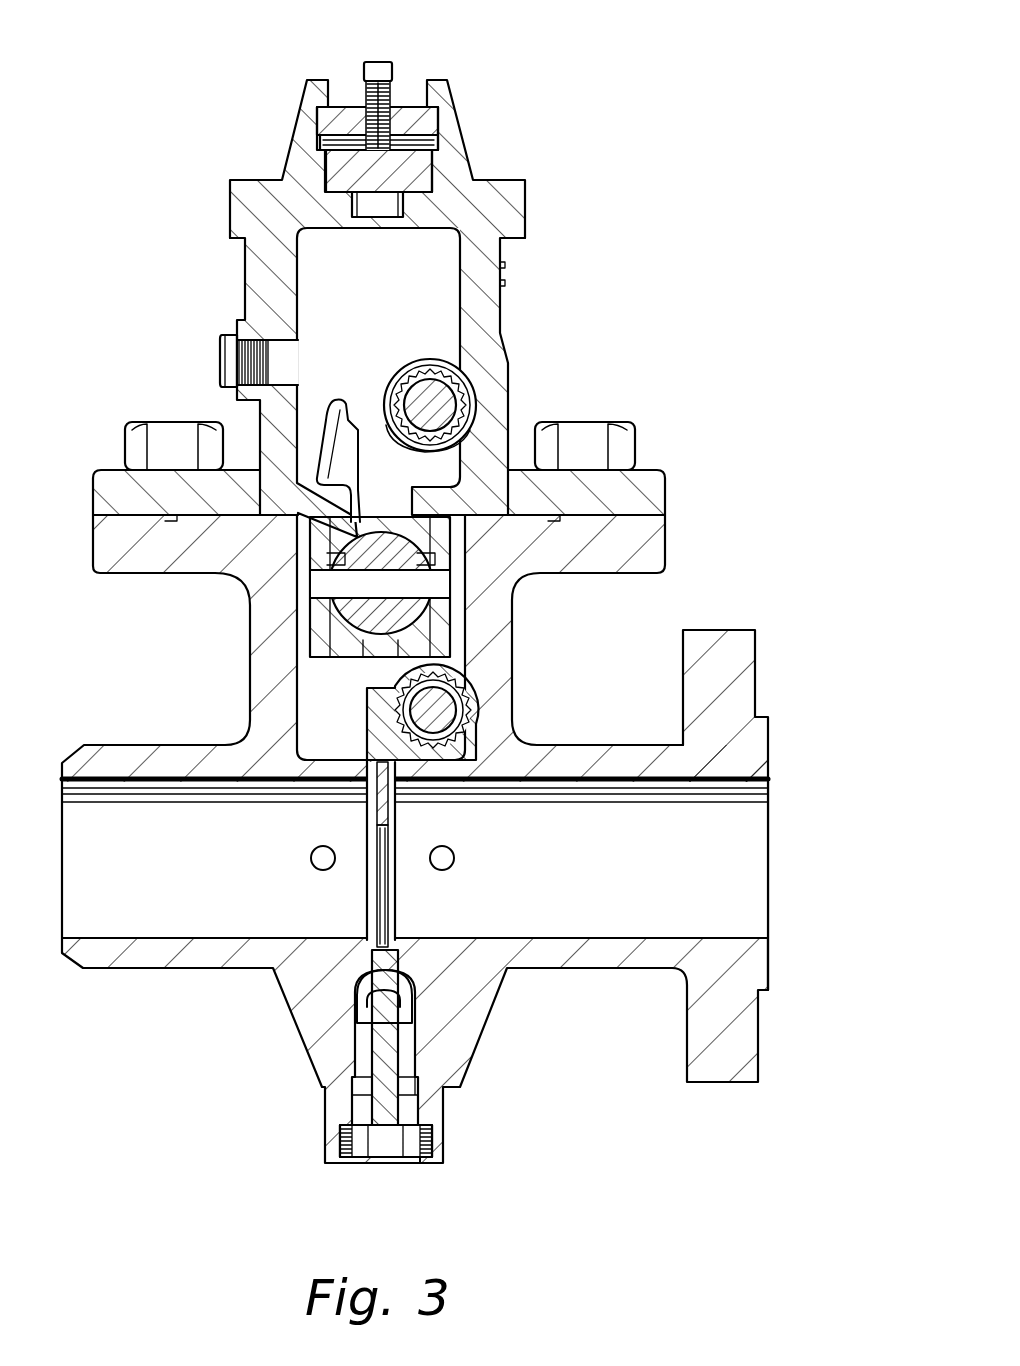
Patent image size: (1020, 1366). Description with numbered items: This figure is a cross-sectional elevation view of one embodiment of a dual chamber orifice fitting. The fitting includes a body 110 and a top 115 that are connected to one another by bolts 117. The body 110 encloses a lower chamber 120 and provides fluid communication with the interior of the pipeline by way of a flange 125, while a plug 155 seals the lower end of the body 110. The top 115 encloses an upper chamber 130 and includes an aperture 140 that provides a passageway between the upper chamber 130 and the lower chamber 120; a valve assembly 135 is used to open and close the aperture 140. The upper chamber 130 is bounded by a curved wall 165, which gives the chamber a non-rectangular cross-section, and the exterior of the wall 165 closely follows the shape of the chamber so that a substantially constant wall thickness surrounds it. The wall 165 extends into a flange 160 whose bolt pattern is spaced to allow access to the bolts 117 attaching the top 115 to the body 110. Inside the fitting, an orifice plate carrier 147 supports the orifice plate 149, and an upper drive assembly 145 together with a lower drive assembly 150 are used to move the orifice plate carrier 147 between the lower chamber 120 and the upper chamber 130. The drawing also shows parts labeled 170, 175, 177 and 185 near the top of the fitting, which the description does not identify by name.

The body 110 is at (152, 975).
The top 115 is at (473, 153).
The bolts 117 is at (627, 438).
The lower chamber 120 is at (325, 708).
The flange 125 is at (762, 1043).
The upper chamber 130 is at (402, 307).
The valve assembly 135 is at (397, 612).
The aperture 140 is at (355, 518).
The upper drive assembly 145 is at (463, 388).
The orifice plate carrier 147 is at (390, 967).
The orifice plate 149 is at (388, 818).
The lower drive assembly 150 is at (440, 702).
The plug 155 is at (358, 1160).
The flange 160 is at (667, 498).
The curved wall 165 is at (492, 308).
The lower plate 170 is at (332, 165).
The upper plate 175 is at (428, 120).
The bolt 177 is at (382, 60).
The side bolt 185 is at (222, 357).